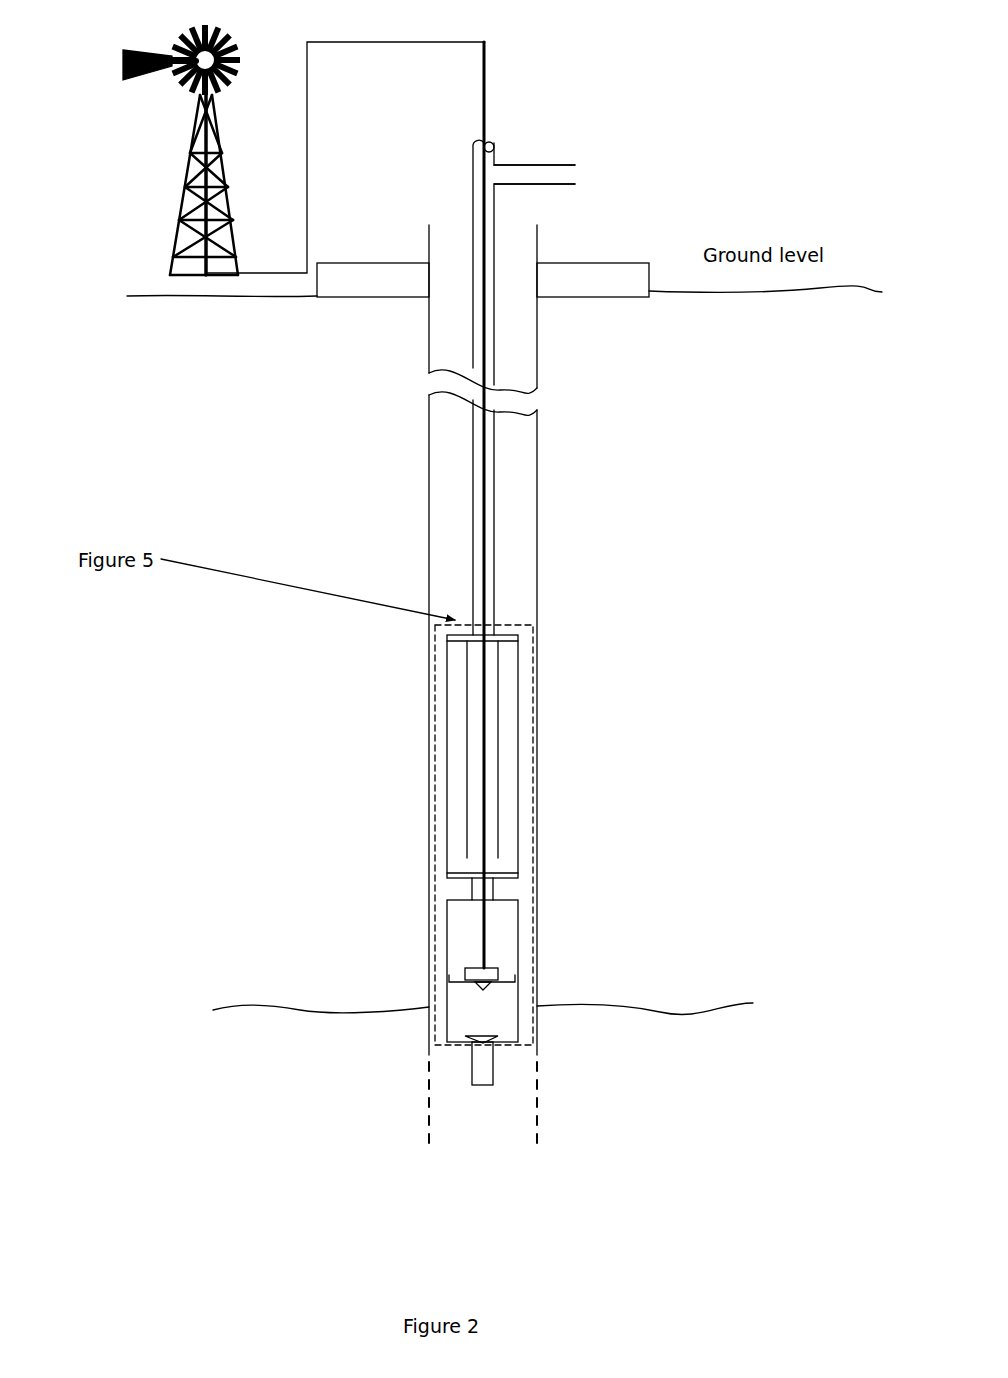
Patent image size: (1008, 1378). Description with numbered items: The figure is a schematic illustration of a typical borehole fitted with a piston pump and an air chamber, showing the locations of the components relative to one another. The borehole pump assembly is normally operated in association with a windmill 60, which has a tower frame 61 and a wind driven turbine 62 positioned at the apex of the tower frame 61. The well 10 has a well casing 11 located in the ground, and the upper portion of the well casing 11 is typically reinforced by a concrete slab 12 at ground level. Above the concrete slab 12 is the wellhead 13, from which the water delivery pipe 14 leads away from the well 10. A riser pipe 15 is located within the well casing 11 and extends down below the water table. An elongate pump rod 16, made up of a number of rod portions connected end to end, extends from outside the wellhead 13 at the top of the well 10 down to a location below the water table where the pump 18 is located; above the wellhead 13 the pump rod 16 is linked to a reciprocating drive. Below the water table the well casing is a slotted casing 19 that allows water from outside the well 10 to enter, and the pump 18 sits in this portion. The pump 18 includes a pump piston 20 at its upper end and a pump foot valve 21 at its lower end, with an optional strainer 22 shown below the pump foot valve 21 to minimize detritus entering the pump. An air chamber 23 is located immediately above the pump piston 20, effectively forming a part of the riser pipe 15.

The well 10 is at (226, 410).
The well casing 11 is at (538, 535).
The concrete slab 12 is at (588, 253).
The wellhead 13 is at (496, 139).
The water delivery pipe 14 is at (570, 158).
The riser pipe 15 is at (489, 575).
The pump rod 16 is at (485, 710).
The pump 18 is at (443, 948).
The slotted casing 19 is at (539, 1066).
The pump piston 20 is at (480, 969).
The pump foot valve 21 is at (488, 1030).
The strainer 22 is at (470, 1072).
The air chamber 23 is at (447, 742).
The windmill 60 is at (167, 150).
The tower frame 61 is at (228, 203).
The wind driven turbine 62 is at (237, 86).